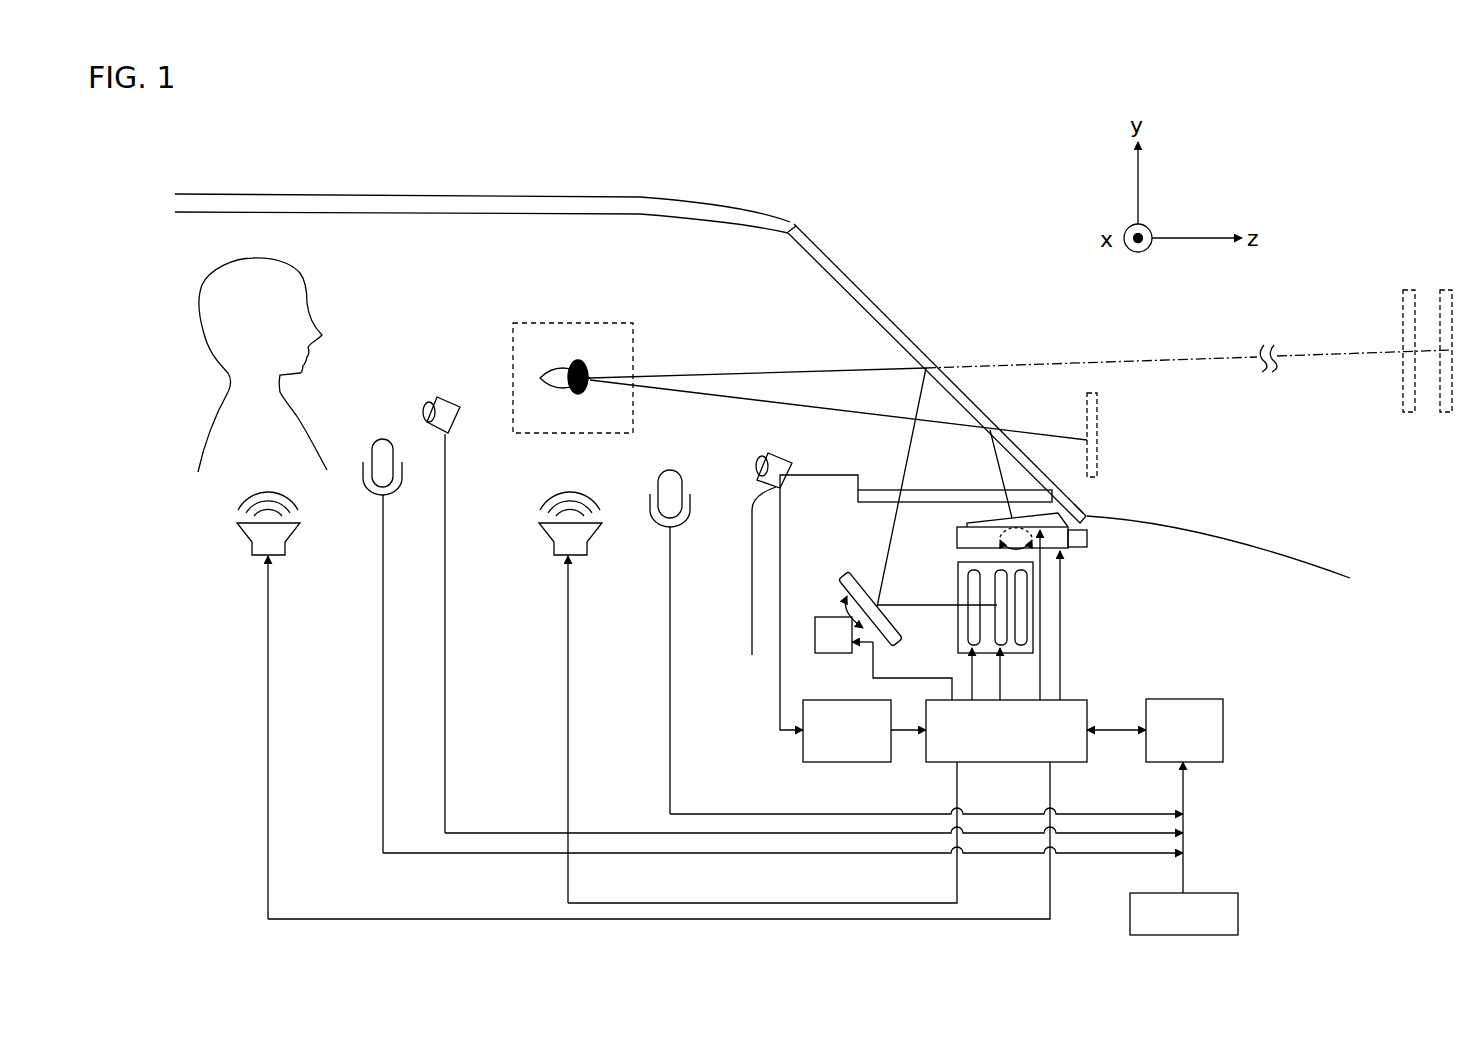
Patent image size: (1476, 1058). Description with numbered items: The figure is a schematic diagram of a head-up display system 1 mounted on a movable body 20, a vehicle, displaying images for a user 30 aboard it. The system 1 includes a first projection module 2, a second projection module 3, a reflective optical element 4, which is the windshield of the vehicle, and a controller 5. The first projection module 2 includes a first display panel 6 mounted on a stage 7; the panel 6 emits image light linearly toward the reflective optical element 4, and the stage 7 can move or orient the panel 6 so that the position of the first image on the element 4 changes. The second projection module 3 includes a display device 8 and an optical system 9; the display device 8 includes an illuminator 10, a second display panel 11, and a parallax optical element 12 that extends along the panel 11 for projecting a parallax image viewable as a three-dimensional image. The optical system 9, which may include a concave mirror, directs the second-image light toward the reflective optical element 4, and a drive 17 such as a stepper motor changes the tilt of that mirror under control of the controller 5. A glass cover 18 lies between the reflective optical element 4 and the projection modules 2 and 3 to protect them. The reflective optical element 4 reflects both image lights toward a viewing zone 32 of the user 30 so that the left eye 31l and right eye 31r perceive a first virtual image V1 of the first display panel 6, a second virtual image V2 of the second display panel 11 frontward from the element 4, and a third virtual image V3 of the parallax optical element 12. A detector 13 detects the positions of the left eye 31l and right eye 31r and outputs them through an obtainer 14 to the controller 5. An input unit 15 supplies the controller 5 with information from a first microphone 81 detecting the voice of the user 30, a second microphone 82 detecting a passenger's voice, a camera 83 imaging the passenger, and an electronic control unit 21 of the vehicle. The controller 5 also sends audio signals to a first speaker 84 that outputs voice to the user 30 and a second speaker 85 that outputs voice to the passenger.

The head-up display system 1 is at (1182, 492).
The first projection module 2 is at (1066, 516).
The second projection module 3 is at (981, 600).
The reflective optical element 4 is at (876, 298).
The controller 5 is at (1068, 762).
The first display panel 6 is at (1080, 504).
The stage 7 is at (1088, 540).
The display device 8 is at (1054, 614).
The optical system 9 is at (843, 575).
The illuminator 10 is at (1020, 598).
The second display panel 11 is at (1000, 617).
The parallax optical element 12 is at (973, 633).
The detector 13 is at (754, 464).
The obtainer 14 is at (845, 762).
The input unit 15 is at (1223, 732).
The drive 17 is at (830, 656).
The glass cover 18 is at (947, 490).
The movable body 20 is at (745, 207).
The electronic control unit 21 is at (1238, 915).
The user 30 is at (583, 421).
The left eye 31l is at (565, 377).
The right eye 31r is at (570, 395).
The viewing zone 32 is at (571, 322).
The first microphone 81 is at (655, 528).
The second microphone 82 is at (368, 492).
The camera 83 is at (424, 414).
The first speaker 84 is at (554, 557).
The second speaker 85 is at (252, 557).
The first virtual image V1 is at (1097, 412).
The second virtual image V2 is at (1446, 289).
The third virtual image V3 is at (1409, 289).